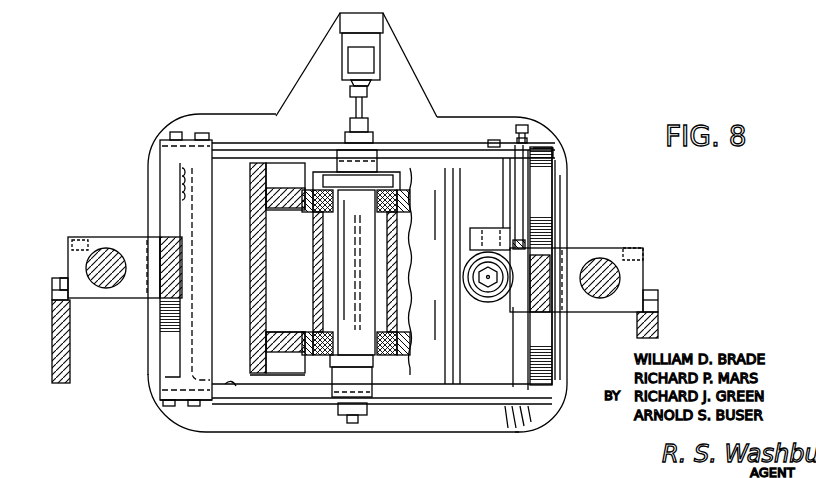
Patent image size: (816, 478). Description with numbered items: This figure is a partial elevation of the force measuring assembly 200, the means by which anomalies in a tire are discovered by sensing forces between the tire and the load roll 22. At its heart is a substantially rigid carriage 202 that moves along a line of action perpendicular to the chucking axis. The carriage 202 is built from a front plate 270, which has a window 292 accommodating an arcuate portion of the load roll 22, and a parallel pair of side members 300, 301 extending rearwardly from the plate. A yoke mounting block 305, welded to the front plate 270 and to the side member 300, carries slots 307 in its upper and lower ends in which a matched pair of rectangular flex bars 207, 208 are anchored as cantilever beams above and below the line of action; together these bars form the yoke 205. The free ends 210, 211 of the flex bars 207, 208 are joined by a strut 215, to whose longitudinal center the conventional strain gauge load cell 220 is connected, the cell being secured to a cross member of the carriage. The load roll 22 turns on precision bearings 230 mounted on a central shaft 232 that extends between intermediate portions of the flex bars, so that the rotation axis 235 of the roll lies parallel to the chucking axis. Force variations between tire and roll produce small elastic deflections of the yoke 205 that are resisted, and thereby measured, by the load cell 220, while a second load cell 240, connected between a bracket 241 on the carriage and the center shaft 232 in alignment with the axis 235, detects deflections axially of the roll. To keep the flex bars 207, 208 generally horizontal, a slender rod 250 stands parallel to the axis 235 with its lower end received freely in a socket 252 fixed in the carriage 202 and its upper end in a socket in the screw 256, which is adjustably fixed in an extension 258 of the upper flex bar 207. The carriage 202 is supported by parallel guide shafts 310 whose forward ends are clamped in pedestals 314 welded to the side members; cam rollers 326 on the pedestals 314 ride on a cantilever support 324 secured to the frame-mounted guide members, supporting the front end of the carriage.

The force measuring assembly 200 is at (552, 106).
The carriage 202 is at (95, 236).
The yoke 205 is at (197, 127).
The flex bar 207 is at (468, 147).
The flex bar 208 is at (440, 404).
The free end 210 is at (503, 145).
The free end 211 is at (524, 428).
The strut 215 is at (493, 363).
The strain gauge load cell 220 is at (466, 274).
The load roll 22 is at (248, 230).
The precision bearings 230 is at (320, 218).
The central shaft 232 is at (336, 388).
The rotation axis 235 is at (355, 267).
The second load cell 240 is at (381, 60).
The bracket 241 is at (375, 26).
The slender rod 250 is at (523, 200).
The socket 252 is at (553, 248).
The screw 256 is at (527, 138).
The extension 258 is at (543, 153).
The front plate 270 is at (285, 100).
The window 292 is at (233, 386).
The side member 300 is at (163, 360).
The side member 301 is at (543, 345).
The yoke mounting block 305 is at (163, 173).
The slots 307 is at (178, 132).
The guide shafts 310 is at (88, 262).
The pedestals 314 is at (70, 238).
The cantilever support 324 is at (51, 362).
The cam rollers 326 is at (76, 300).